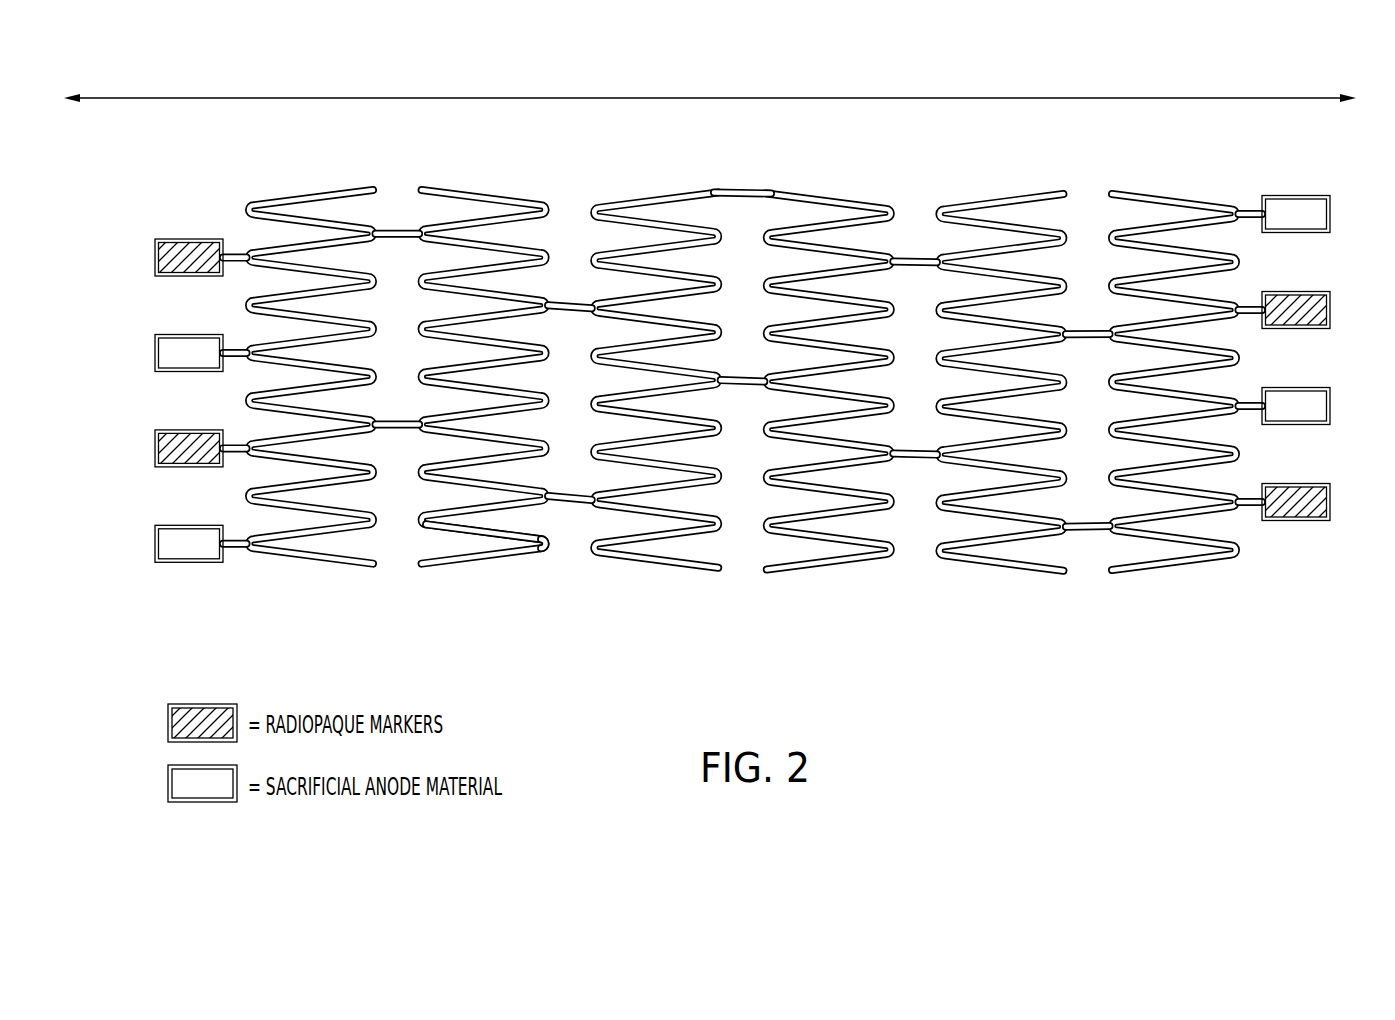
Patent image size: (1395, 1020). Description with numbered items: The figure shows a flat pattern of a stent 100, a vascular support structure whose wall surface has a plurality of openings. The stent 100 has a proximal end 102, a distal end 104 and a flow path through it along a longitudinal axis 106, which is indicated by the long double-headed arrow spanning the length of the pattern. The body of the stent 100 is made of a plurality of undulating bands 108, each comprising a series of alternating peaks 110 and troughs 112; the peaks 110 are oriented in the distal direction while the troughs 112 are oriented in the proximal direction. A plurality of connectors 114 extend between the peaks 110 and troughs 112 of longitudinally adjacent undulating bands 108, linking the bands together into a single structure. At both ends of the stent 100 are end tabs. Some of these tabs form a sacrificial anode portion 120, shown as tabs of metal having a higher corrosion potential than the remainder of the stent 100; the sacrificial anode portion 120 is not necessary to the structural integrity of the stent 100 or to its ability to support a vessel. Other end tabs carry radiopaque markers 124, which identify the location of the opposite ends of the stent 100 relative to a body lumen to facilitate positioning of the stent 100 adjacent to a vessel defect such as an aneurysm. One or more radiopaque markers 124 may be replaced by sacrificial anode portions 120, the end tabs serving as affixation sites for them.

The stent 100 is at (745, 405).
The proximal end 102 is at (226, 195).
The distal end 104 is at (1248, 588).
The longitudinal axis 106 is at (767, 100).
The undulating band 108 is at (473, 191).
The peak 110 is at (552, 551).
The trough 112 is at (433, 530).
The connector 114 is at (580, 507).
The sacrificial anode portion 120 is at (1318, 197).
The radiopaque marker 124 is at (1326, 293).